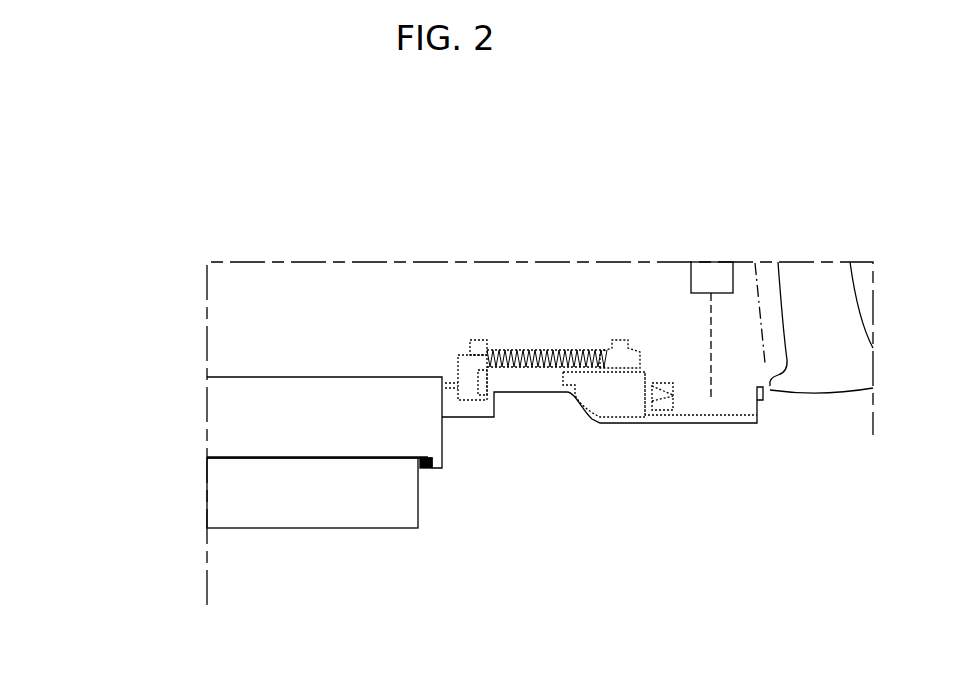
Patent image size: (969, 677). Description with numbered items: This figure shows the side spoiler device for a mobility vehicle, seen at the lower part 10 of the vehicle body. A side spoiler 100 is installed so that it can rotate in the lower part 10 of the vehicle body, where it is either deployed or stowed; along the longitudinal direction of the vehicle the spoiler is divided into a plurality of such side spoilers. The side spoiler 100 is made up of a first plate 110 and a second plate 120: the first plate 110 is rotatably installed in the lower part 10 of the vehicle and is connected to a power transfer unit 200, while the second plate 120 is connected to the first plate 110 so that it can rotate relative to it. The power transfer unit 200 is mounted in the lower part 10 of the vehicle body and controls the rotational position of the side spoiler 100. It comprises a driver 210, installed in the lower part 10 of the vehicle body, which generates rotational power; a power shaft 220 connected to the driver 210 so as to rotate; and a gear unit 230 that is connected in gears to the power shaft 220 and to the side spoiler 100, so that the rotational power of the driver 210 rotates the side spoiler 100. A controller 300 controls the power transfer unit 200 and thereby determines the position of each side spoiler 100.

The lower part of vehicle body 10 is at (351, 320).
The side spoiler 100 is at (233, 452).
The first plate 110 is at (235, 424).
The second plate 120 is at (235, 490).
The power transfer unit 200 is at (601, 474).
The driver 210 is at (692, 393).
The power shaft 220 is at (552, 352).
The gear unit 230 is at (468, 444).
The controller 300 is at (711, 272).